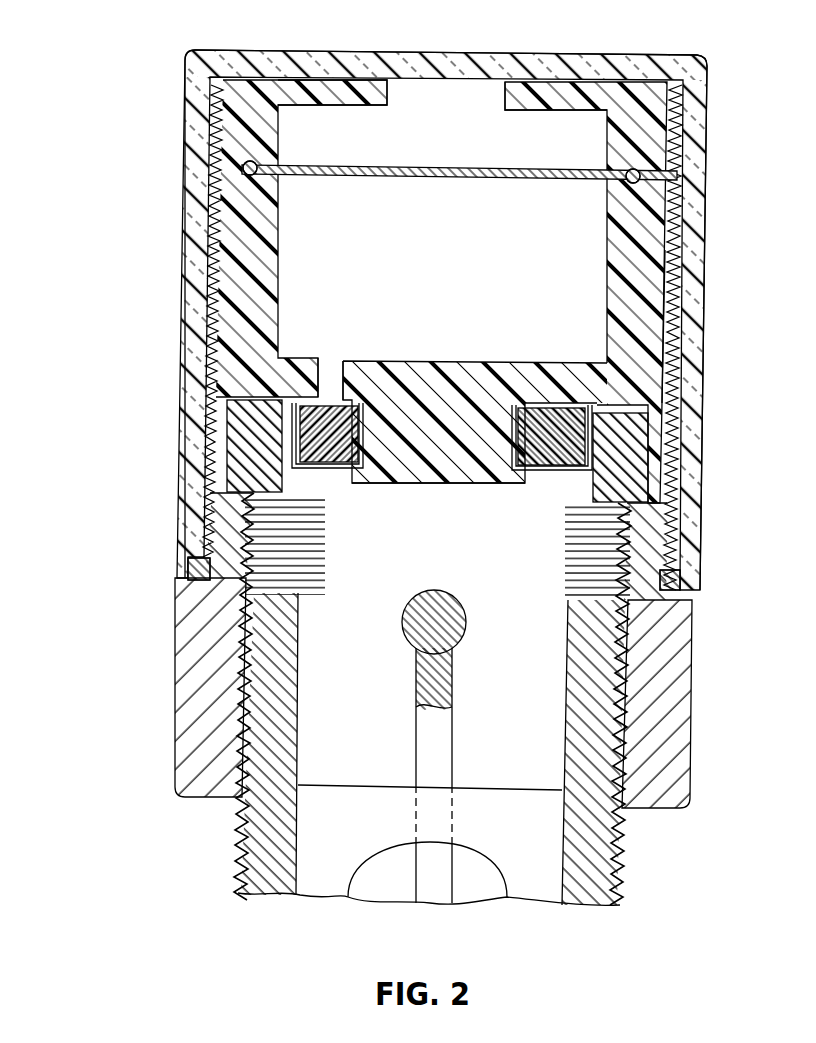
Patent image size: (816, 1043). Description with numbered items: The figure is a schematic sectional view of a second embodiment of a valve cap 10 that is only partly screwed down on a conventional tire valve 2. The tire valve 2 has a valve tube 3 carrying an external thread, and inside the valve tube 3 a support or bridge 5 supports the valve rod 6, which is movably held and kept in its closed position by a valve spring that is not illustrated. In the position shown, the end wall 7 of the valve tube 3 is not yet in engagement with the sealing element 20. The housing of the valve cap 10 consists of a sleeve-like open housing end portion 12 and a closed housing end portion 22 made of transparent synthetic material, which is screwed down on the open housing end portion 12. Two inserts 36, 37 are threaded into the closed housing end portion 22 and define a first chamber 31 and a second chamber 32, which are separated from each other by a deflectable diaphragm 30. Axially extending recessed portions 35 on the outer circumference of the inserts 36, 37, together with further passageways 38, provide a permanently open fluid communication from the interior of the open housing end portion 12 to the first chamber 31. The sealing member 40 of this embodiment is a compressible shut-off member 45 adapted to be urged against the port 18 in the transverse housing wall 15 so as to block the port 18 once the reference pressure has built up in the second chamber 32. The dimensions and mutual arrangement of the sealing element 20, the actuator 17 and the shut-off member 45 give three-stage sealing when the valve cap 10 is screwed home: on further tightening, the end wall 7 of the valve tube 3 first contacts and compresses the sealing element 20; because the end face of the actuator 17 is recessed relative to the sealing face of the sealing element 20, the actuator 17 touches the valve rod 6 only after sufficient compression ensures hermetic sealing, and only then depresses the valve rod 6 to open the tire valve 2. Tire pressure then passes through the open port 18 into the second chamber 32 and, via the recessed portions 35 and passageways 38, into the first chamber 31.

The tire valve 2 is at (365, 918).
The valve tube 3 is at (265, 868).
The support or bridge 5 is at (345, 788).
The valve rod 6 is at (448, 672).
The end wall 7 is at (300, 588).
The valve cap 10 is at (165, 295).
The open housing end portion 12 is at (680, 703).
The transverse housing wall 15 is at (470, 385).
The actuator 17 is at (430, 485).
The port 18 is at (320, 378).
The sealing element 20 is at (242, 455).
The closed housing end portion 22 is at (688, 263).
The deflectable diaphragm 30 is at (432, 180).
The first chamber 31 is at (303, 118).
The second chamber 32 is at (305, 215).
The axially extending recessed portions 35 is at (222, 333).
The insert 36 is at (650, 134).
The insert 37 is at (637, 338).
The passageways 38 is at (562, 88).
The sealing member 40 is at (330, 478).
The shut-off member 45 is at (343, 420).